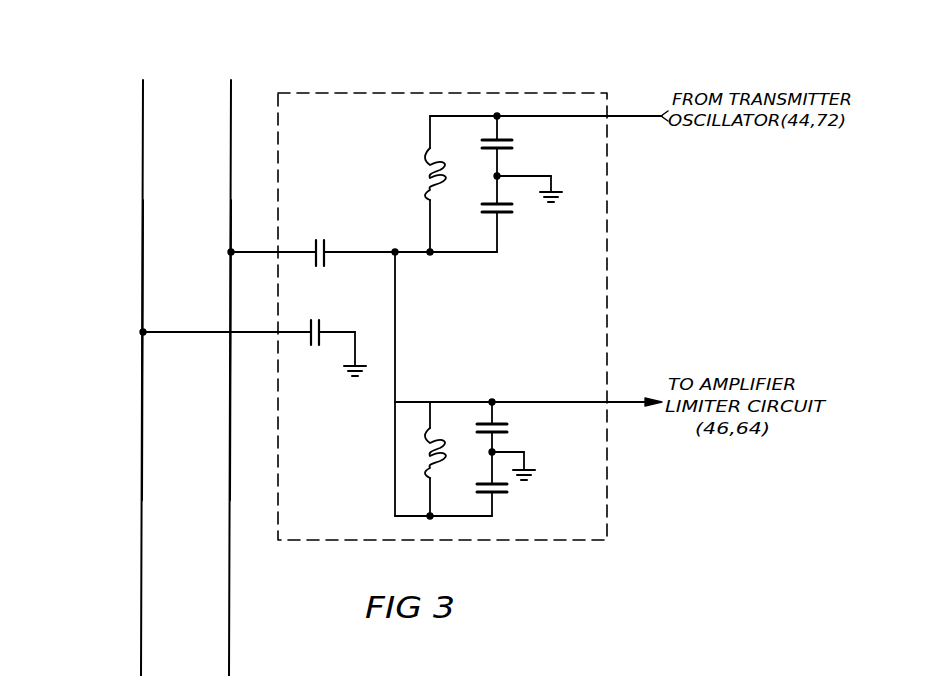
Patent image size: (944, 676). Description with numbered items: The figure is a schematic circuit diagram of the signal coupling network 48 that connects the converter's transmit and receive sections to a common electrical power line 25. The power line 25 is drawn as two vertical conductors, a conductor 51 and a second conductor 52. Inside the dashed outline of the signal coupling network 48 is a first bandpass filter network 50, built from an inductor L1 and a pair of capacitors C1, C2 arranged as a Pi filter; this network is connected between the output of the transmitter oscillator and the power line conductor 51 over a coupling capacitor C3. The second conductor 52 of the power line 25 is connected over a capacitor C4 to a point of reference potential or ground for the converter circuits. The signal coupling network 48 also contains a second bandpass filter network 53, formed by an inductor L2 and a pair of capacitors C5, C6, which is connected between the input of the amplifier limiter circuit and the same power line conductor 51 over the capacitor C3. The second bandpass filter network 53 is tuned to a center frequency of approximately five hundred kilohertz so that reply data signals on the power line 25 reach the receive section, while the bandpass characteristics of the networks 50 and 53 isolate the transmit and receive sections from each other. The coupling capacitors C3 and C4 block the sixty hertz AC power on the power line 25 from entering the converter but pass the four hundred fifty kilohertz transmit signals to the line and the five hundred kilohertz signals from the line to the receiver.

The power line 25 is at (245, 89).
The conductor 51 is at (231, 400).
The second conductor 52 is at (143, 398).
The signal coupling network 48 is at (540, 543).
The first bandpass filter network 50 is at (523, 196).
The second bandpass filter network 53 is at (532, 452).
The capacitor C1 is at (510, 152).
The capacitor C2 is at (504, 232).
The capacitor C3 is at (337, 238).
The capacitor C4 is at (334, 318).
The capacitor C5 is at (500, 437).
The capacitor C6 is at (497, 478).
The inductor L1 is at (414, 178).
The inductor L2 is at (420, 445).